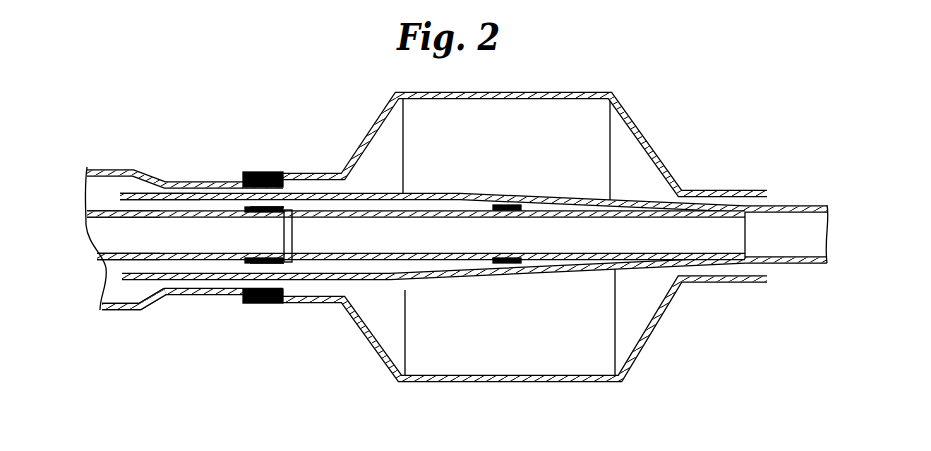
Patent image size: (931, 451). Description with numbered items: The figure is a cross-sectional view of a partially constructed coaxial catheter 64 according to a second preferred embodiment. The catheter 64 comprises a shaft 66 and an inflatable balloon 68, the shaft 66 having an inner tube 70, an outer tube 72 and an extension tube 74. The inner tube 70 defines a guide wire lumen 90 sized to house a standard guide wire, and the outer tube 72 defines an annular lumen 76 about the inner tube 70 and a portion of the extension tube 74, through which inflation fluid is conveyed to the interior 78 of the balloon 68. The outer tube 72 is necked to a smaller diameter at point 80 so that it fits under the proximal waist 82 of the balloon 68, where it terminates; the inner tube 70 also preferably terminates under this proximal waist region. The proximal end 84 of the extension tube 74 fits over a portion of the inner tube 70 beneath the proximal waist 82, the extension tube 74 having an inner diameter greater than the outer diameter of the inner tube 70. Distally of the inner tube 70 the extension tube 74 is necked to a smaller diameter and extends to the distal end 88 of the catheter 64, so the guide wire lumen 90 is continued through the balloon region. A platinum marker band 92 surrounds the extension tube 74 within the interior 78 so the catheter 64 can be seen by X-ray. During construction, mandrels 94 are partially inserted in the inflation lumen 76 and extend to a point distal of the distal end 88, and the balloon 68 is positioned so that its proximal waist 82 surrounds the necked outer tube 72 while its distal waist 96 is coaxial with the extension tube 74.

The catheter 64 is at (213, 113).
The shaft 66 is at (192, 316).
The inflatable balloon 68 is at (660, 124).
The inner tube 70 is at (100, 312).
The outer tube 72 is at (118, 312).
The extension tube 74 is at (355, 258).
The annular lumen 76 is at (92, 193).
The interior of the balloon 78 is at (590, 346).
The necked point of the outer tube 80 is at (157, 166).
The proximal waist of the balloon 82 is at (340, 174).
The proximal end of the extension tube 84 is at (263, 258).
The distal end of the catheter 88 is at (773, 290).
The guide wire lumen 90 is at (106, 239).
The platinum marker band 92 is at (515, 198).
The mandrels 94 is at (430, 193).
The distal waist of the balloon 96 is at (708, 175).